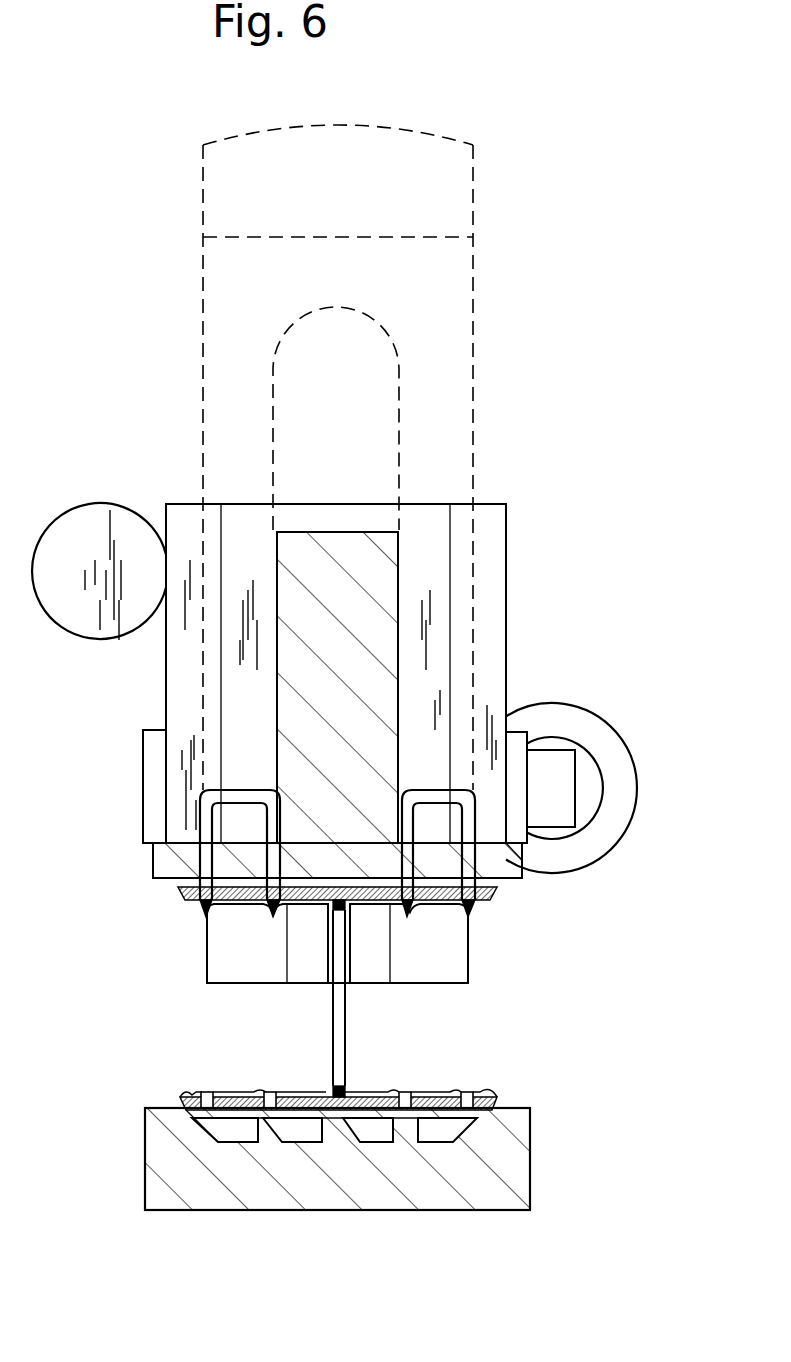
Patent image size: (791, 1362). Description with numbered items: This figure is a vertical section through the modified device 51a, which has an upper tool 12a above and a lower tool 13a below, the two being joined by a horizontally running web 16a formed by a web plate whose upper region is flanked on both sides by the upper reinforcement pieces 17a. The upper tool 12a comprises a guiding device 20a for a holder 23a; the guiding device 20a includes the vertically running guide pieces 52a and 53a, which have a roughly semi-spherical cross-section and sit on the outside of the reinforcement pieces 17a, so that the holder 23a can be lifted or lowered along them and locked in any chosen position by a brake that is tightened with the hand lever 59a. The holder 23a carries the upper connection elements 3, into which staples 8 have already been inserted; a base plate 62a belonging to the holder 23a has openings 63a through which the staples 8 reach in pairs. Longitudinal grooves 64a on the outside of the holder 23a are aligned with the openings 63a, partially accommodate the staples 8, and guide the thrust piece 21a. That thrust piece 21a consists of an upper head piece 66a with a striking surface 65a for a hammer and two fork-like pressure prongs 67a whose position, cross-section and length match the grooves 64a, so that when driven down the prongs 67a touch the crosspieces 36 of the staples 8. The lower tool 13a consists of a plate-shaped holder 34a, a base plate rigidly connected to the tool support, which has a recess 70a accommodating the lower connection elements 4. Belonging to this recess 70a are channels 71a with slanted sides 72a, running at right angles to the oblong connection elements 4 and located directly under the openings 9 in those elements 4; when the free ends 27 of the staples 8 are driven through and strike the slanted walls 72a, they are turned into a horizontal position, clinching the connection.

The device 51a is at (54, 355).
The striking surface 65a is at (452, 134).
The head piece 66a is at (448, 205).
The thrust piece 21a is at (482, 282).
The pressure prongs 67a is at (222, 420).
The upper tool 12a is at (514, 567).
The longitudinal grooves 64a is at (490, 622).
The holder 23a is at (500, 651).
The guiding device 20a is at (166, 657).
The hand lever 59a is at (585, 727).
The crosspieces of the staples 36 is at (241, 795).
The staples 8 is at (188, 861).
The openings 63a is at (235, 868).
The upper connection elements 3 is at (470, 897).
The base plate 62a is at (508, 868).
The guide piece 53a is at (216, 950).
The guide piece 52a is at (447, 946).
The free ends of the staples 27 is at (272, 905).
The upper reinforcement pieces 17a is at (306, 970).
The web 16a is at (348, 1042).
The openings in the connection elements 9 is at (470, 1097).
The lower connection elements 4 is at (500, 1108).
The plate-shaped holder 34a is at (168, 1160).
The lower tool 13a is at (542, 1166).
The channels 71a is at (238, 1135).
The slanted sides 72a is at (467, 1137).
The recess 70a is at (197, 1110).